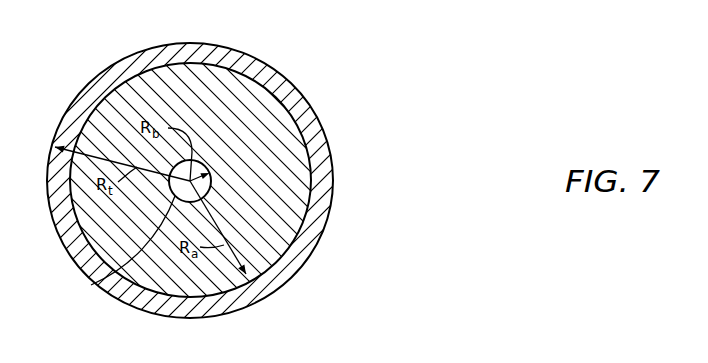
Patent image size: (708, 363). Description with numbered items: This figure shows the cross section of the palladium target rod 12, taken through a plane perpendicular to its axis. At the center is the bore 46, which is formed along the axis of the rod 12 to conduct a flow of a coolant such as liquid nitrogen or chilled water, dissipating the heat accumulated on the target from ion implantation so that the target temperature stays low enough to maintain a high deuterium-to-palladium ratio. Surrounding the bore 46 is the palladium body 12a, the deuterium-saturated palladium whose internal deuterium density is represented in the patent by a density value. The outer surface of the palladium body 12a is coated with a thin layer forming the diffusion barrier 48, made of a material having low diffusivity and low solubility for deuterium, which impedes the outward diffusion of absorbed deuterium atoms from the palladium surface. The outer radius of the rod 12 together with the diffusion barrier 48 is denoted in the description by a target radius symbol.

The palladium target rod 12 is at (319, 254).
The palladium body 12a is at (282, 148).
The diffusion barrier layer 48 is at (240, 65).
The bore 46 is at (91, 285).